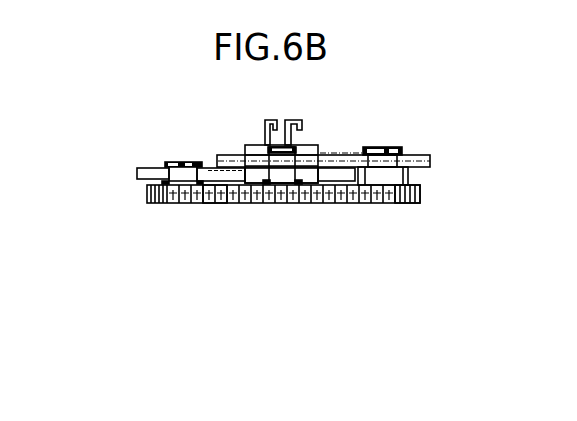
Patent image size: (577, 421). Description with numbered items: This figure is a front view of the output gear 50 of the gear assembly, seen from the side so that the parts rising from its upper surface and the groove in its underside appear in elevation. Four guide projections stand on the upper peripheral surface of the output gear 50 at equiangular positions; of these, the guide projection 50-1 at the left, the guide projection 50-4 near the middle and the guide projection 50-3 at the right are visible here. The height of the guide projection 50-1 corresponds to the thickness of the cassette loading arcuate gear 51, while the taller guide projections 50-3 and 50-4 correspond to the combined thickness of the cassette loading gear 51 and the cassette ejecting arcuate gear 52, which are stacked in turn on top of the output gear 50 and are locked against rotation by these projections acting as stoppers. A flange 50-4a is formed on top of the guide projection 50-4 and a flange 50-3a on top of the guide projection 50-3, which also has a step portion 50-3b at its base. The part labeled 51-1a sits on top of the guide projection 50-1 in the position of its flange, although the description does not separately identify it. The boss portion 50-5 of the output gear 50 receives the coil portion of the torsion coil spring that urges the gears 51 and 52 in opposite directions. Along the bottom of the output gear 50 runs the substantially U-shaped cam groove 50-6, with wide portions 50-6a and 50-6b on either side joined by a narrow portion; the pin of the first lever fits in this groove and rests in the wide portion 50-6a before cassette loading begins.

The output gear 50 is at (220, 106).
The guide projection 50-1 is at (168, 172).
The guide projection 50-3 is at (390, 163).
The flange 50-3a is at (404, 151).
The step portion 50-3b is at (410, 180).
The guide projection 50-4 is at (290, 173).
The flange 50-4a is at (297, 150).
The boss portion 50-5 is at (256, 146).
The cam groove 50-6 is at (173, 205).
The wide portion 50-6a is at (215, 187).
The wide portion 50-6b is at (380, 200).
The cassette loading arcuate gear 51 is at (337, 155).
The left post cap 51-1a is at (165, 164).
The cassette ejecting arcuate gear 52 is at (243, 178).